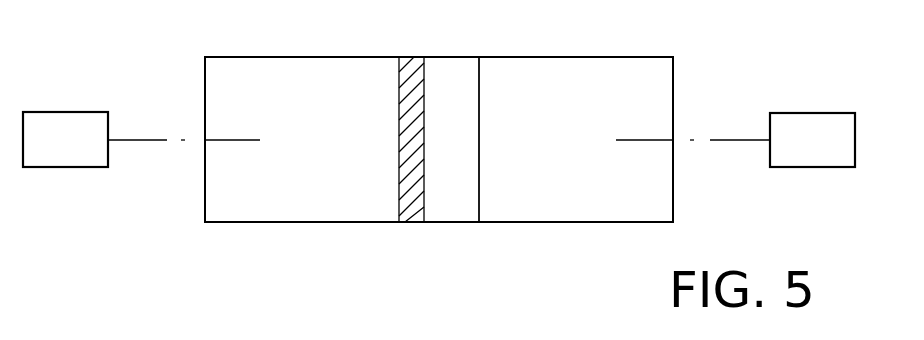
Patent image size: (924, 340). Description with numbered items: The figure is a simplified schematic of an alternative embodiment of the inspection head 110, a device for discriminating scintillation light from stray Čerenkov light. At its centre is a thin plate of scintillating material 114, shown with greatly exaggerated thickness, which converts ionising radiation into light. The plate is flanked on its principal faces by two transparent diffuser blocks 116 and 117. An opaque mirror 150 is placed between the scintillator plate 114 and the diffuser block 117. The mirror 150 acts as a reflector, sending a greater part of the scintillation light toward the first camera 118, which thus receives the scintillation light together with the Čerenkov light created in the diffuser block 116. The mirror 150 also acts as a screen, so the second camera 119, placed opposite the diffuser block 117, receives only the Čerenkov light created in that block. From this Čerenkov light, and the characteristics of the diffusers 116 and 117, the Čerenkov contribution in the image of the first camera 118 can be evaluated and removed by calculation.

The inspection head 110 is at (400, 243).
The thin plate of scintillating material 114 is at (467, 65).
The transparent diffuser block 116 is at (600, 70).
The transparent diffuser block 117 is at (262, 65).
The first camera 118 is at (807, 121).
The second camera 119 is at (68, 118).
The opaque mirror 150 is at (410, 63).